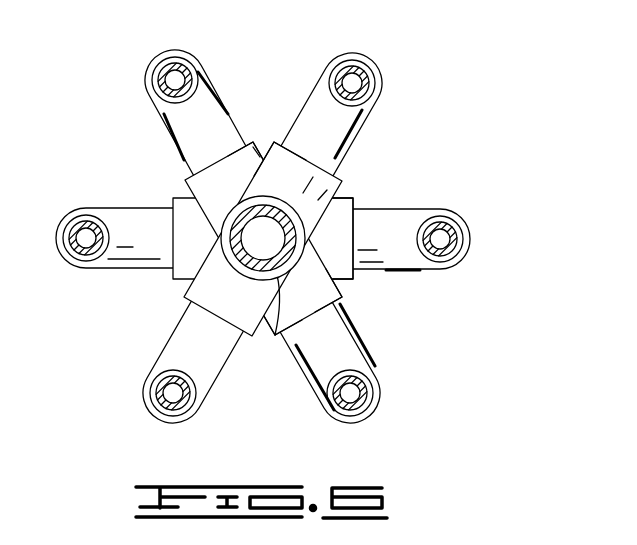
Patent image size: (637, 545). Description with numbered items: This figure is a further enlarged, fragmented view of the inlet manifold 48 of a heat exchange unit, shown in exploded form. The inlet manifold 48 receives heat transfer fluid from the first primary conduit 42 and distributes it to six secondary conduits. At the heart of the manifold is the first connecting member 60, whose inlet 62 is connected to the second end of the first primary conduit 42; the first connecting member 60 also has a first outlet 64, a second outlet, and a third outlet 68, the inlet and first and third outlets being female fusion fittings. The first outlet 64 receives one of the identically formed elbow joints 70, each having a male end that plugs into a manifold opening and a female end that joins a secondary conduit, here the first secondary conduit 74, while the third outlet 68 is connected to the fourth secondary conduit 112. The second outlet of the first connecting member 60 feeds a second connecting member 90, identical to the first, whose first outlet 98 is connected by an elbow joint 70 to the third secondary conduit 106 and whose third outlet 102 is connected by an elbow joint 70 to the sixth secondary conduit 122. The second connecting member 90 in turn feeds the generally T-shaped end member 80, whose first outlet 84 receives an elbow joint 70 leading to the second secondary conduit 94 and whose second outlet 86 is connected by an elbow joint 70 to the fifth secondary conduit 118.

The first primary conduit 42 is at (297, 232).
The inlet manifold 48 is at (290, 230).
The first connecting member 60 is at (267, 243).
The inlet 62 is at (268, 337).
The first outlet 64 is at (185, 302).
The third outlet 68 is at (290, 141).
The elbow joint 70 is at (213, 77).
The first secondary conduit 74 is at (187, 413).
The end member 80 is at (354, 288).
The first outlet 84 is at (173, 198).
The second outlet 86 is at (353, 260).
The second connecting member 90 is at (253, 130).
The second secondary conduit 94 is at (72, 252).
The first outlet 98 is at (180, 165).
The third outlet 102 is at (277, 337).
The third secondary conduit 106 is at (158, 68).
The fourth secondary conduit 112 is at (372, 74).
The fifth secondary conduit 118 is at (462, 236).
The sixth secondary conduit 122 is at (367, 412).